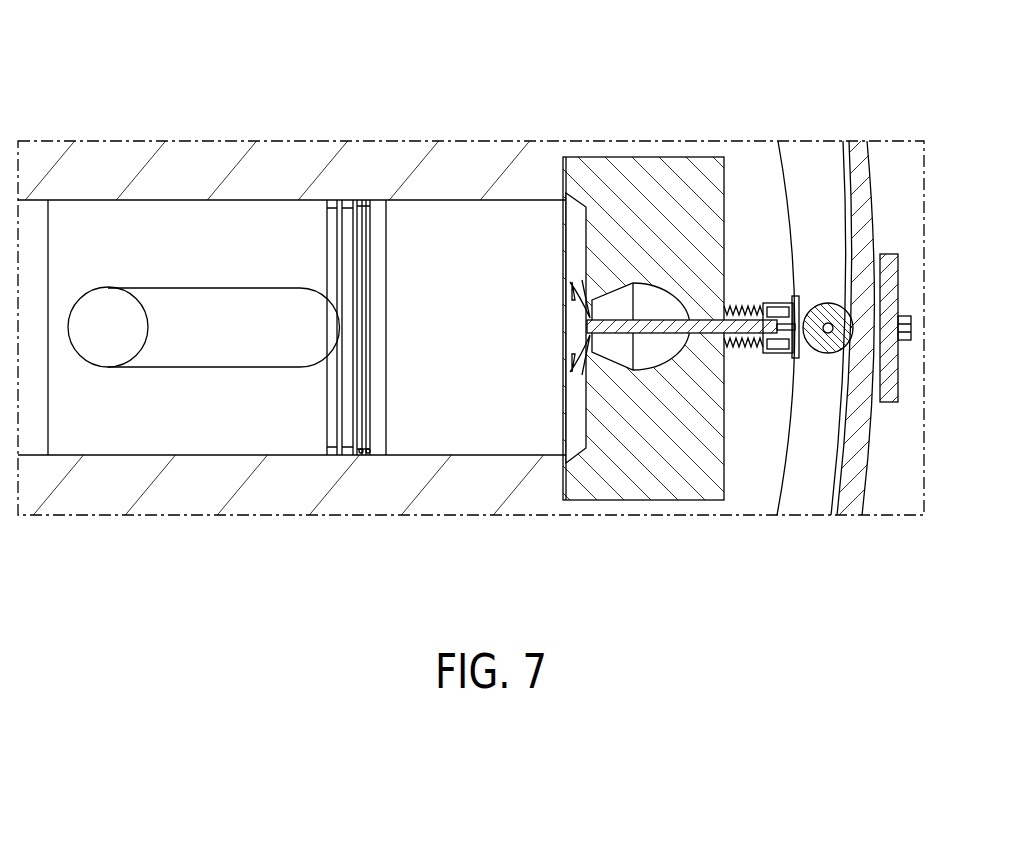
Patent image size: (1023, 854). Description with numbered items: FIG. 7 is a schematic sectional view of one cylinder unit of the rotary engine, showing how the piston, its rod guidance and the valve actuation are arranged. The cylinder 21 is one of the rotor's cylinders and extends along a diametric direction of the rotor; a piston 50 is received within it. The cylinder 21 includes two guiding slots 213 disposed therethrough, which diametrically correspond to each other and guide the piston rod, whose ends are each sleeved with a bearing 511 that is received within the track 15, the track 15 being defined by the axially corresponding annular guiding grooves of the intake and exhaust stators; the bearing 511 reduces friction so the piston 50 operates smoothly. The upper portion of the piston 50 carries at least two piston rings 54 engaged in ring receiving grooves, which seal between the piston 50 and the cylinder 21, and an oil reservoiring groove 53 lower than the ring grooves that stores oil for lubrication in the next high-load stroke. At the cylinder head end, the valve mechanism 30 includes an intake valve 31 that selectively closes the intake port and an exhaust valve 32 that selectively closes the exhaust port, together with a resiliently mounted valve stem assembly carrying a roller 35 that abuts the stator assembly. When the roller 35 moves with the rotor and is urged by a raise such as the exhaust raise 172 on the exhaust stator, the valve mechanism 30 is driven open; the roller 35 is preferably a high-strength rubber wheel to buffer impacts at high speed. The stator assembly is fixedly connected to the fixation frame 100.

The track 15 is at (100, 485).
The cylinder 21 is at (186, 495).
The piston 50 is at (244, 438).
The oil reservoiring groove 53 is at (333, 200).
The piston ring 54 is at (368, 200).
The bearing 511 is at (103, 307).
The guiding slot 213 is at (205, 287).
The exhaust valve 32 is at (577, 333).
The intake valve 31 is at (592, 298).
The valve mechanism 30 is at (752, 270).
The roller 35 is at (823, 303).
The exhaust raise 172 is at (832, 300).
The fixation frame 100 is at (893, 372).